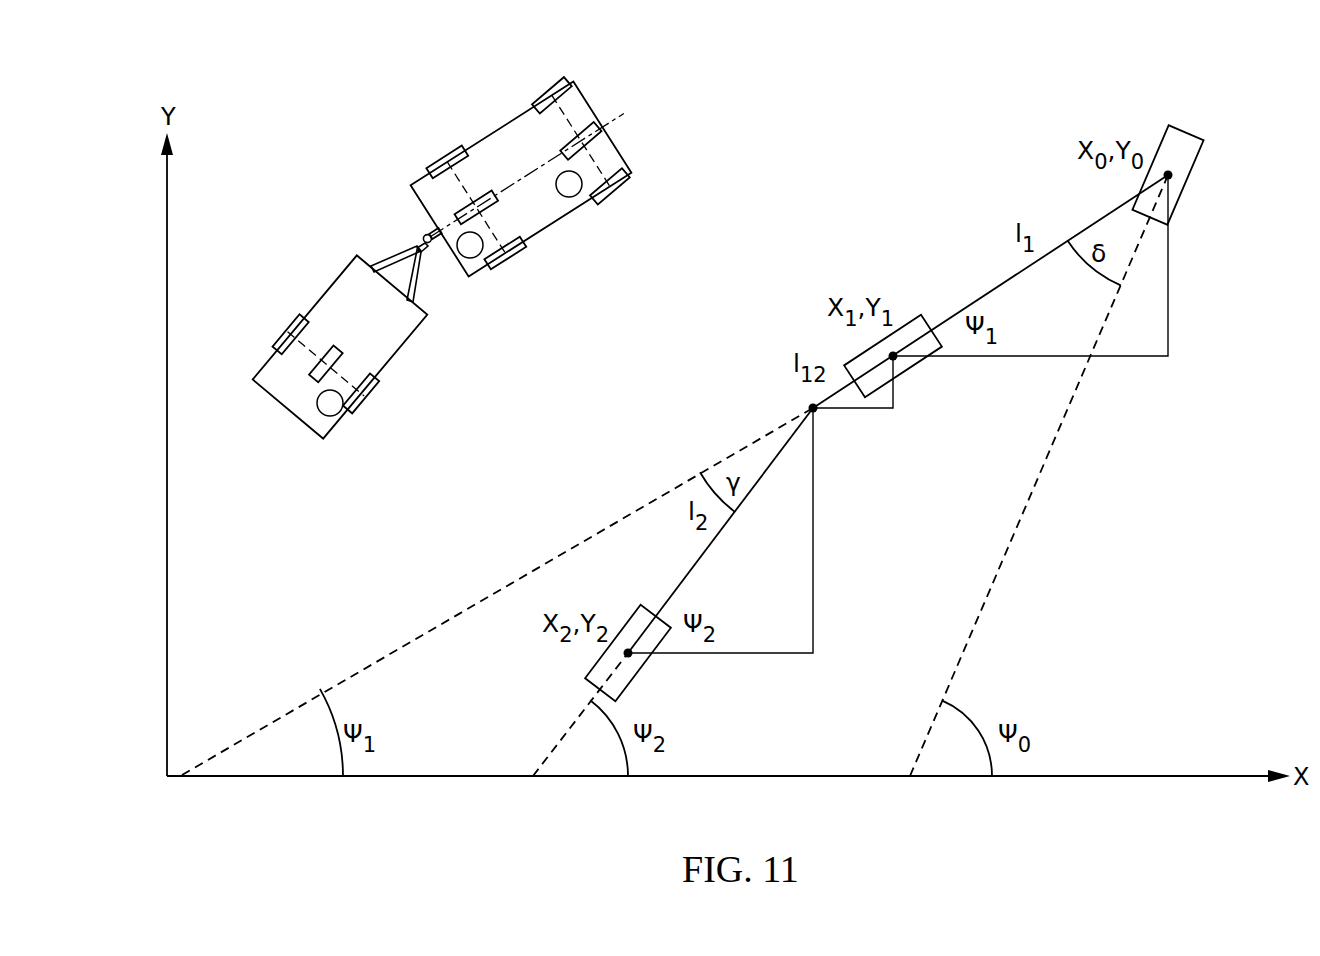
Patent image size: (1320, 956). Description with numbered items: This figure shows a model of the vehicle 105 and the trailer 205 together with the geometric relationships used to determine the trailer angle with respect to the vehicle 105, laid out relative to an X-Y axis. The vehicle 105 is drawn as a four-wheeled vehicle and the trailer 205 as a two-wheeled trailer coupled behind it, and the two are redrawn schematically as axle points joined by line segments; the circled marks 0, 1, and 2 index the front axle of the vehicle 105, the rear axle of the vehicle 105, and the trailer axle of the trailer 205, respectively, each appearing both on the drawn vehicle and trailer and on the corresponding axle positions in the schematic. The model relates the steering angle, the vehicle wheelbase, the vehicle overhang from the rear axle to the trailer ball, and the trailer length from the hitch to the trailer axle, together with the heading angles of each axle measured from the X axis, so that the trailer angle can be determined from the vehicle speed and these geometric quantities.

The vehicle 105 is at (484, 138).
The trailer 205 is at (328, 289).
The front axle of vehicle 0 is at (1167, 145).
The rear axle of vehicle 1 is at (893, 299).
The trailer axle 2 is at (628, 622).